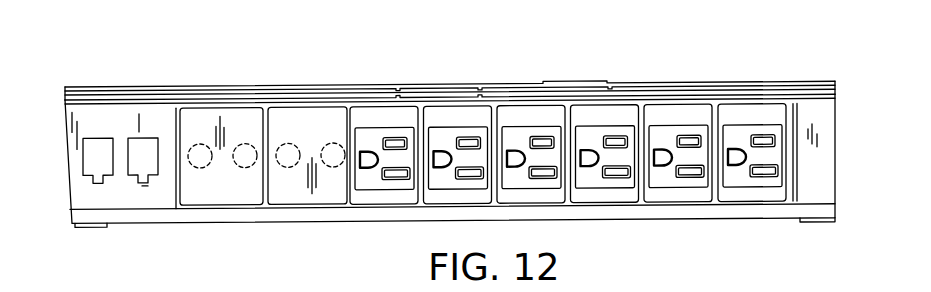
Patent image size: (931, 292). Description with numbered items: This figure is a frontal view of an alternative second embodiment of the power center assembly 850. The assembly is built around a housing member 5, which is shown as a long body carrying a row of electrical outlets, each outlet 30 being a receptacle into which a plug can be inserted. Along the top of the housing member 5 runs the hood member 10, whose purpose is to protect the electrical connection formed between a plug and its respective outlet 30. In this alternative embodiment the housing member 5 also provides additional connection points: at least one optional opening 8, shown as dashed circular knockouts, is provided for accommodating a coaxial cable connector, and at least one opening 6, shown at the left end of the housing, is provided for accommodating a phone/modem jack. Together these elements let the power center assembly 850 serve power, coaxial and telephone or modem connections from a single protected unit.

The power center assembly 850 is at (615, 53).
The housing member 5 is at (112, 226).
The hood member 10 is at (142, 89).
The opening for phone/modem jack 6 is at (98, 138).
The optional opening 8 is at (330, 170).
The outlet 30 is at (738, 175).